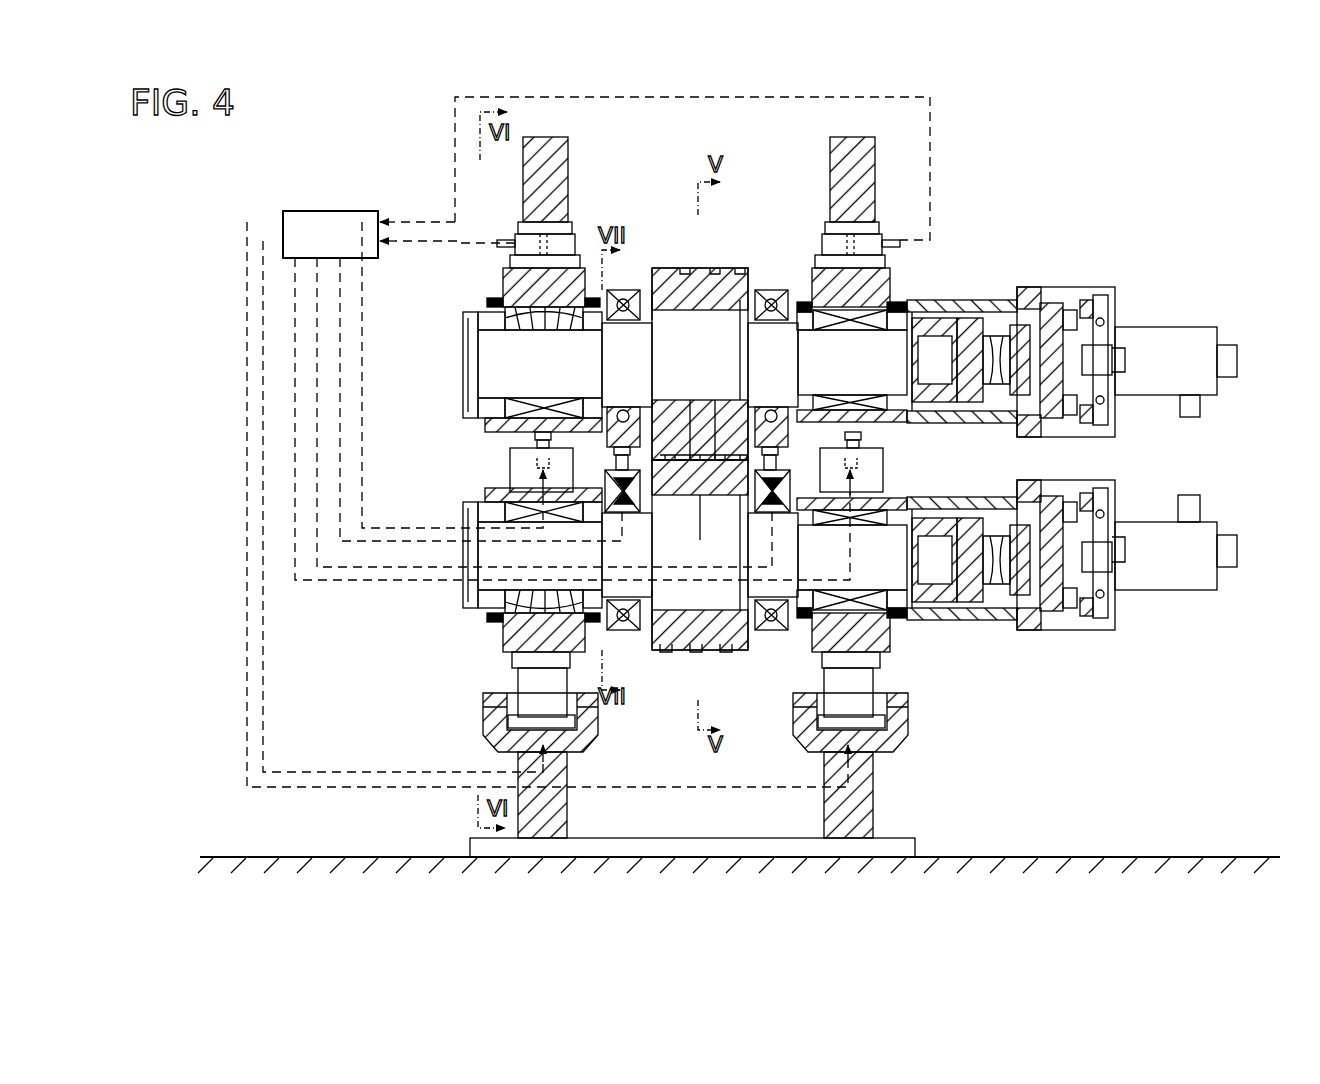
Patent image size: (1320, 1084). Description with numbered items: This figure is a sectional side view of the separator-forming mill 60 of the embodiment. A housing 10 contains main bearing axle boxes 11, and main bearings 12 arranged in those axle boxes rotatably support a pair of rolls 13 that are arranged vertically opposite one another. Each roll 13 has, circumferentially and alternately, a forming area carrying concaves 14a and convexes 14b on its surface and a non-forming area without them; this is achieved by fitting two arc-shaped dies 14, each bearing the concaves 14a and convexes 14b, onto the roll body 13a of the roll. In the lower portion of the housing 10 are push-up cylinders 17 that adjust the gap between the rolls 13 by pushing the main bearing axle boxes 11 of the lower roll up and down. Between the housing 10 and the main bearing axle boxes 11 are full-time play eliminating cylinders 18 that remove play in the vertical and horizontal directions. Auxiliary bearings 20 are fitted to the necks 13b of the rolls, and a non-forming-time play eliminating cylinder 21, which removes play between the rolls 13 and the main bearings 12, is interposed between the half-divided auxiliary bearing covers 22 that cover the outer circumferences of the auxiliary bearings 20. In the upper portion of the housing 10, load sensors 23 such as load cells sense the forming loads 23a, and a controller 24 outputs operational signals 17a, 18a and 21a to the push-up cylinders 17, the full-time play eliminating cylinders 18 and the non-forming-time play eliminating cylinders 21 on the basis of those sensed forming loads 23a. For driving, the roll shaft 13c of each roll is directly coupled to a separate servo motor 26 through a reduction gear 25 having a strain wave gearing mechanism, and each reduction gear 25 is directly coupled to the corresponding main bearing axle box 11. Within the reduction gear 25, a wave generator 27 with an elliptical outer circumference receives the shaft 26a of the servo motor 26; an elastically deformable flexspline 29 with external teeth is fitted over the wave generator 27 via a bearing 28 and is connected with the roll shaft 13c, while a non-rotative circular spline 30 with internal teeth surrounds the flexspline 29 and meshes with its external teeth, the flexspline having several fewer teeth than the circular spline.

The housing 10 is at (567, 148).
The main bearing axle box 11 is at (503, 282).
The main bearing 12 is at (470, 338).
The roll 13 is at (668, 258).
The roll body 13a is at (738, 295).
The neck 13b is at (648, 292).
The roll shaft 13c is at (945, 330).
The arc-shaped die 14 is at (732, 300).
The concave 14a is at (726, 268).
The convex 14b is at (697, 268).
The push-up cylinder 17 is at (478, 730).
The operational signal 17a is at (326, 768).
The full-time play eliminating cylinder 18 is at (530, 456).
The operational signal 18a is at (363, 524).
The auxiliary bearing 20 is at (632, 290).
The non-forming-time play eliminating cylinder 21 is at (605, 480).
The operational signal 21a is at (372, 545).
The auxiliary bearing cover 22 is at (618, 290).
The load sensor 23 is at (576, 246).
The forming load 23a is at (930, 152).
The controller 24 is at (330, 210).
The reduction gear 25 is at (1035, 283).
The servo motor 26 is at (1205, 322).
The shaft 26a is at (1118, 365).
The wave generator 27 is at (1105, 350).
The bearing 28 is at (1110, 412).
The flexspline 29 is at (1070, 300).
The circular spline 30 is at (1097, 295).
The separator-forming mill 60 is at (1137, 195).